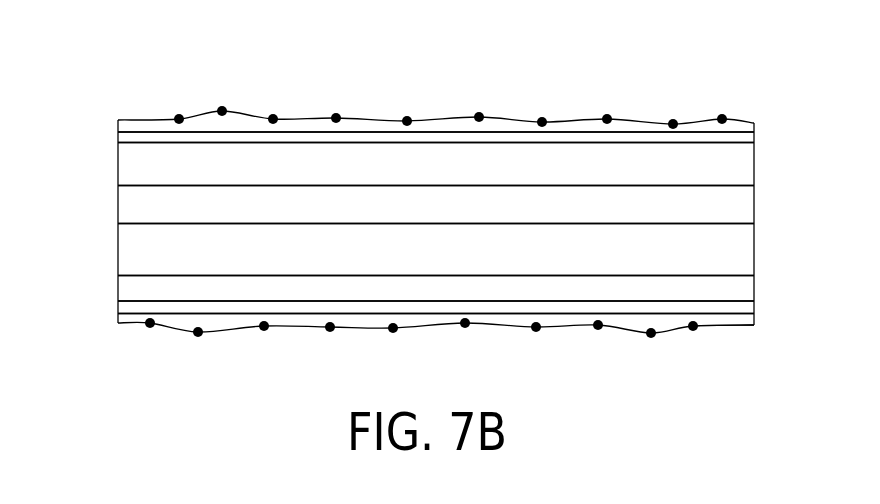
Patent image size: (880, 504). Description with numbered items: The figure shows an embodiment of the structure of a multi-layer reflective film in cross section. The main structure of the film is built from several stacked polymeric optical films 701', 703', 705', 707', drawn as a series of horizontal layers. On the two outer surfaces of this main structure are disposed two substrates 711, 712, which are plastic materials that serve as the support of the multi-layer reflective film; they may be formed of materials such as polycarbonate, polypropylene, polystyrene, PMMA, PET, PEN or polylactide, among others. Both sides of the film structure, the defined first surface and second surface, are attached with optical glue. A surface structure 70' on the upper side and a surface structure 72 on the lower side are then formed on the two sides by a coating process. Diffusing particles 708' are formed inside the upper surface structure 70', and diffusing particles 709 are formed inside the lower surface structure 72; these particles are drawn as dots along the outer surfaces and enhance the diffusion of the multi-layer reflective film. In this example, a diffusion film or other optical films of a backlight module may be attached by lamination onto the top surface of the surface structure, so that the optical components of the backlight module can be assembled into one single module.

The surface structure 70' is at (475, 200).
The polymeric optical film 701' is at (482, 290).
The polymeric optical film 703' is at (482, 250).
The polymeric optical film 705' is at (482, 205).
The polymeric optical film 707' is at (482, 164).
The diffusing particles 708' is at (436, 84).
The diffusing particles 709 is at (693, 326).
The substrate 711 is at (118, 135).
The substrate 712 is at (118, 305).
The surface structure 72 is at (743, 322).